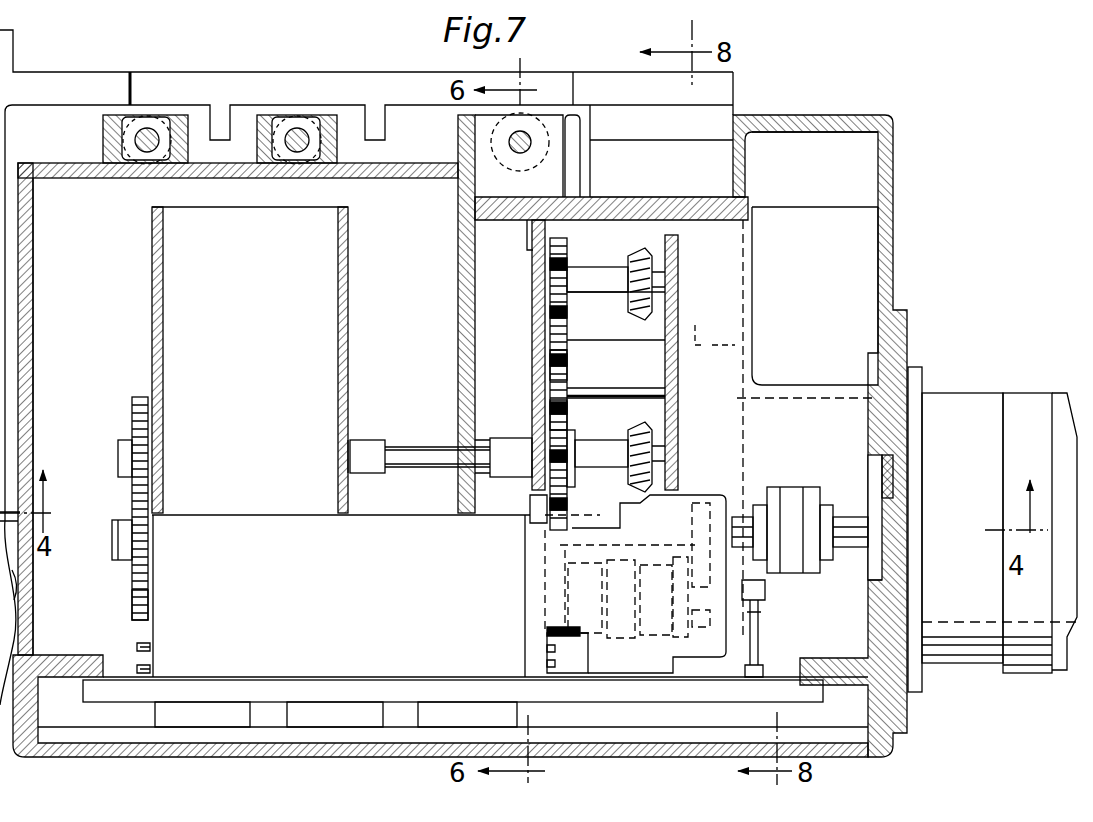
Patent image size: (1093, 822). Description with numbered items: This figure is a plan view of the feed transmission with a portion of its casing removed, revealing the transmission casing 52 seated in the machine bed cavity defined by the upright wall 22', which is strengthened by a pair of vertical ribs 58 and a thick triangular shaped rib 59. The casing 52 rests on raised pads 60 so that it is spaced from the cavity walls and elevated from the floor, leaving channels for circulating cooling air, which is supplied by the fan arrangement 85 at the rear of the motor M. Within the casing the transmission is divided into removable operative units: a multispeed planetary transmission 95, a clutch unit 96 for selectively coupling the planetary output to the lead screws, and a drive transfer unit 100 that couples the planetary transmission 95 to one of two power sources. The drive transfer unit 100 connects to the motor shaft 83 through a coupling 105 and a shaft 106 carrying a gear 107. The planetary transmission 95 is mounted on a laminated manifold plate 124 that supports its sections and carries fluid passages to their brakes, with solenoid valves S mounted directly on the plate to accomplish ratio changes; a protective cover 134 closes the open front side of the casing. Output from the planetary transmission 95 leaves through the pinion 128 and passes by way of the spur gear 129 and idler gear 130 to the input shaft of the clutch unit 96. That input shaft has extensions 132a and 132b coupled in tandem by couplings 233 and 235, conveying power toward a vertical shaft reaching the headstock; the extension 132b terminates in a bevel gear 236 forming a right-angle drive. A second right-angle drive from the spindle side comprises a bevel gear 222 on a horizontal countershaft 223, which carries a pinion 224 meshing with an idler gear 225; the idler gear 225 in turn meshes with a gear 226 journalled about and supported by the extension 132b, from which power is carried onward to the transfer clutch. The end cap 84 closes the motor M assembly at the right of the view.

The upright wall 22' is at (374, 58).
The pads 60 is at (147, 112).
The vertical ribs 58 is at (222, 140).
The triangular shaped rib 59 is at (722, 157).
The transmission casing 52 is at (673, 212).
The clutch unit 96 is at (183, 336).
The spur gear 129 is at (132, 416).
The idler gear 130 is at (132, 524).
The pinion 128 is at (132, 599).
The multispeed planetary transmission 95 is at (180, 627).
The coupling 233 is at (372, 438).
The extension shaft 132a is at (428, 452).
The coupling 235 is at (508, 438).
The pinion 224 is at (567, 268).
The idler gear 225 is at (568, 385).
The gear 226 is at (570, 427).
The bevel gear 222 is at (633, 252).
The horizontal countershaft 223 is at (607, 295).
The bevel gear 236 is at (628, 440).
The extension shaft 132b is at (606, 465).
The gear 107 is at (546, 515).
The coupling 105 is at (810, 495).
The shaft 106 is at (742, 518).
The motor shaft 83 is at (852, 518).
The drive transfer unit 100 is at (763, 343).
The motor M is at (957, 398).
The fan arrangement 85 is at (1020, 398).
The motor end cap 84 is at (1062, 420).
The solenoid valves S is at (228, 710).
The laminated manifold plate 124 is at (100, 697).
The protective cover 134 is at (100, 750).